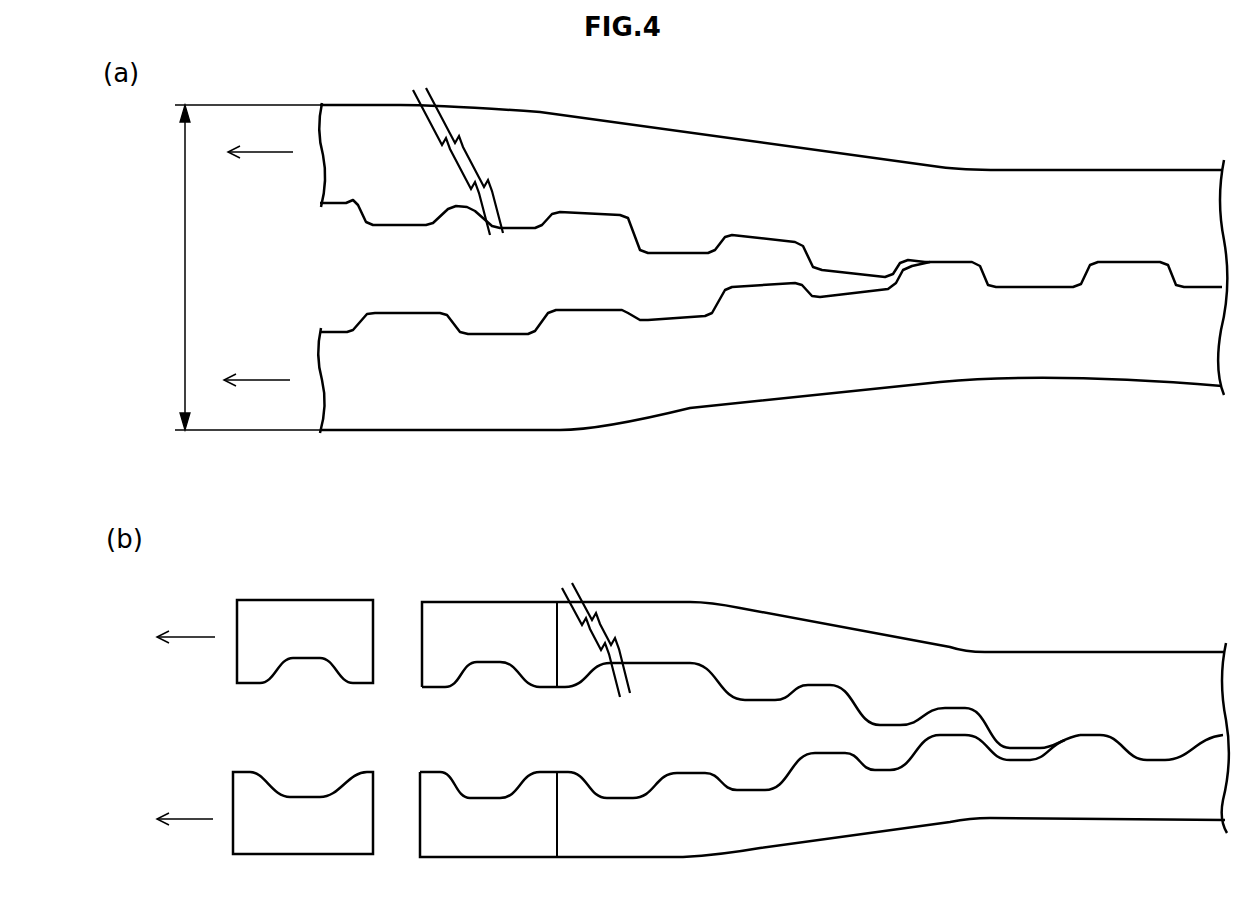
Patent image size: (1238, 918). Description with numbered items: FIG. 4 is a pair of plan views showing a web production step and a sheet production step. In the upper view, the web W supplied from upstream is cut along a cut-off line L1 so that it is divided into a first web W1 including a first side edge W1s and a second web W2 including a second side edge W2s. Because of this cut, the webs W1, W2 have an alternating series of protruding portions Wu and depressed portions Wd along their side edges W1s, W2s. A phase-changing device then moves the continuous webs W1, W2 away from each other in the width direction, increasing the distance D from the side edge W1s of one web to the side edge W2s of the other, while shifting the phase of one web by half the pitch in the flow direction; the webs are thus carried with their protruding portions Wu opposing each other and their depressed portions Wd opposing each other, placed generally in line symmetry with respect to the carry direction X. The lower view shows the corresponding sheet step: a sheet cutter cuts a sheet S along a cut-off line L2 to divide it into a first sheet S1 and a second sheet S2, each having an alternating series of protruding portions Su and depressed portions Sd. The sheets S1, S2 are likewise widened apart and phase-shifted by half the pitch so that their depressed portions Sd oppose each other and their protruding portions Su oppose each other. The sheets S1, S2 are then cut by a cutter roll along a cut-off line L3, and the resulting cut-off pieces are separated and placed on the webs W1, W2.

The web W is at (1155, 188).
The first web W1 is at (357, 120).
The second web W2 is at (683, 393).
The first side edge W1s is at (390, 104).
The second side edge W2s is at (387, 433).
The protruding portions Wu is at (407, 226).
The depressed portions Wd is at (345, 332).
The cut-off line L1 is at (1013, 285).
The distance D is at (237, 267).
The carry direction X is at (225, 472).
The sheet S is at (1173, 672).
The first sheet S1 is at (293, 623).
The second sheet S2 is at (294, 838).
The protruding portions Su is at (550, 690).
The depressed portions Sd is at (497, 665).
The cut-off line L2 is at (1125, 750).
The cut-off line L3 is at (553, 627).